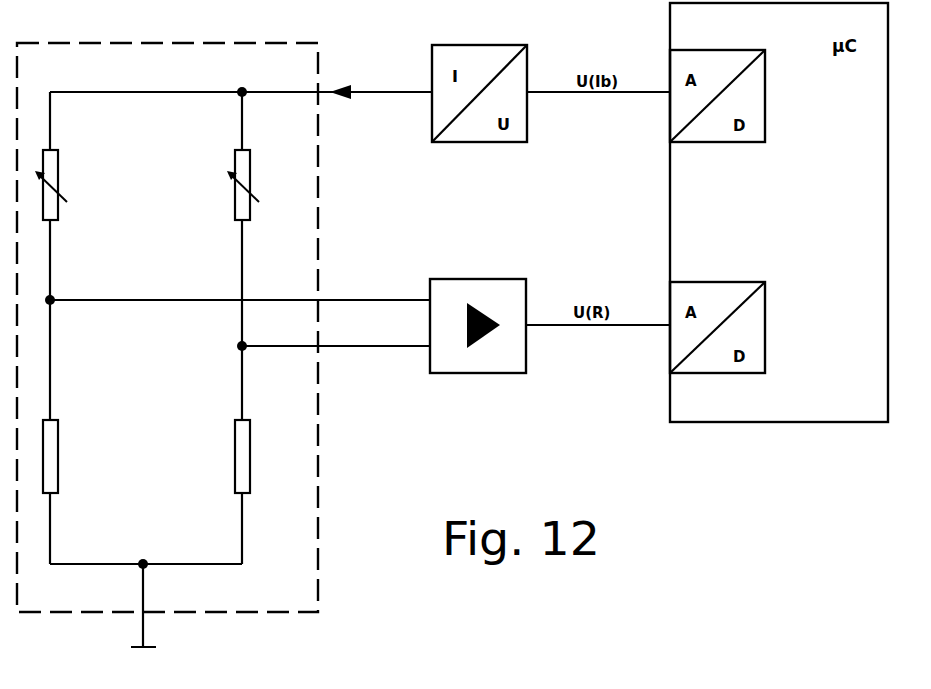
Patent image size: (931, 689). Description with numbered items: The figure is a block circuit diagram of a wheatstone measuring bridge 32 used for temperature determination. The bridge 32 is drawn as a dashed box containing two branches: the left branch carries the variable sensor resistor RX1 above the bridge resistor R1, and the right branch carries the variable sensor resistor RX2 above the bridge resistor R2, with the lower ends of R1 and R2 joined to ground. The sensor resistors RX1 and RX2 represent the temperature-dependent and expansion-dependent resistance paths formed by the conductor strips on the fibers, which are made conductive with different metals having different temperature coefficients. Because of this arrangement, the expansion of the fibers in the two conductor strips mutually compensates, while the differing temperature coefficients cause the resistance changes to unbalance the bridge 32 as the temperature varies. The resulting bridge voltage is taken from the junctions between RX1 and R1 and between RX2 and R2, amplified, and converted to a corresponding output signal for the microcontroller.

The wheatstone measuring bridge 32 is at (245, 31).
The first sensor resistor RX1 is at (68, 185).
The second sensor resistor RX2 is at (259, 185).
The first bridge resistor R1 is at (67, 456).
The second bridge resistor R2 is at (259, 456).